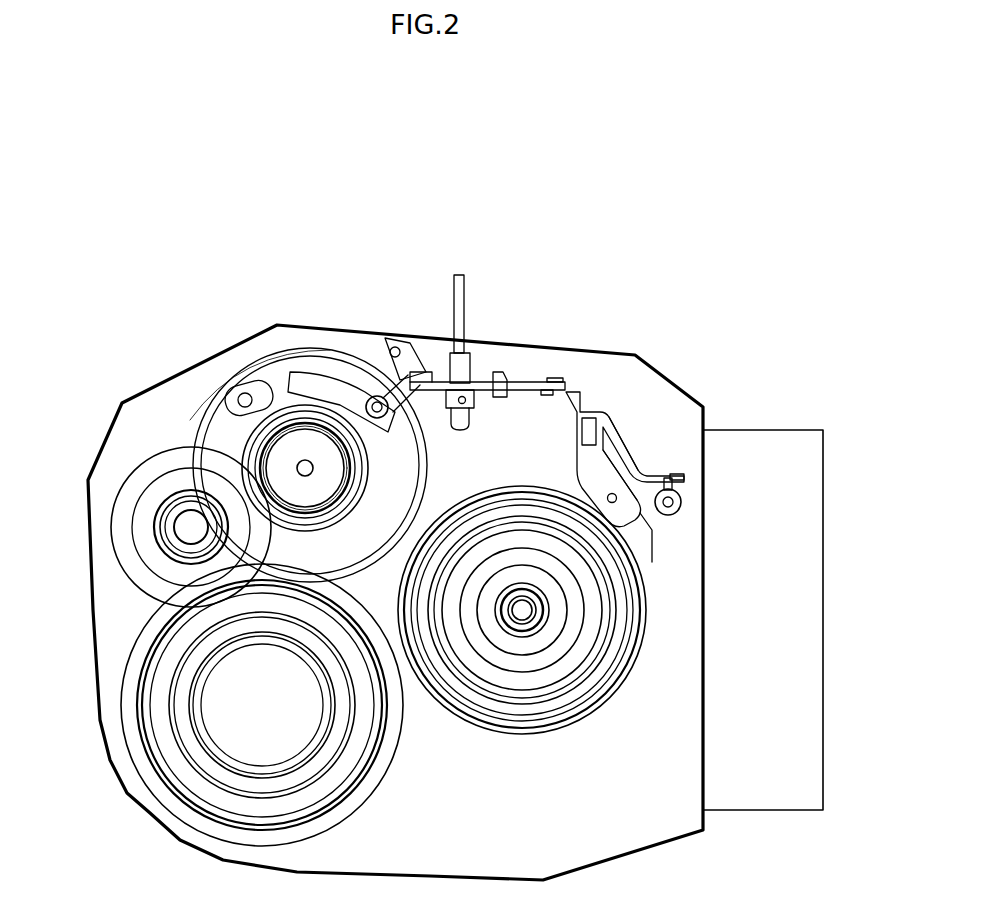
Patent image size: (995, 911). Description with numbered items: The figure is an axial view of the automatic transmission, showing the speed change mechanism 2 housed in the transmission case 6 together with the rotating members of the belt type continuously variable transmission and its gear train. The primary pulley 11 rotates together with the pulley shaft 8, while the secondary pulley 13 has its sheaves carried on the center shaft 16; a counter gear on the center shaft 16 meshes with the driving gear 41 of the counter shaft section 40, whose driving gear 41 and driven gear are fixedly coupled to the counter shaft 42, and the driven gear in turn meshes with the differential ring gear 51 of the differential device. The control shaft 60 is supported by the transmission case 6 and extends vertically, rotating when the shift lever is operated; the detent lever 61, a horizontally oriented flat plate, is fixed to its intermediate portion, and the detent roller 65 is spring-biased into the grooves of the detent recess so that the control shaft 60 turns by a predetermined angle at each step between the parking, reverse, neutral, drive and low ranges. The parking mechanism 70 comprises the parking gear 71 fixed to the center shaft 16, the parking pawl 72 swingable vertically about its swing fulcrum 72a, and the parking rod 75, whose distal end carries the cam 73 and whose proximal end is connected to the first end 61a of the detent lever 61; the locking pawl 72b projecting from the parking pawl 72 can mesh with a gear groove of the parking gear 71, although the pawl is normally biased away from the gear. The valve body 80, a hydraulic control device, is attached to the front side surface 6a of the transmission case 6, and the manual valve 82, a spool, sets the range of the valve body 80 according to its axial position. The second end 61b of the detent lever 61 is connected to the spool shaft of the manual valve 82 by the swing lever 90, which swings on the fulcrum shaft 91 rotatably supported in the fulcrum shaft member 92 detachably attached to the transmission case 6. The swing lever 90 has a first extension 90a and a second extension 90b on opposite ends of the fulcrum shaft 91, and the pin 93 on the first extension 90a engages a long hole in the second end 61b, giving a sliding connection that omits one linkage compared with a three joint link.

The speed change mechanism 2 is at (276, 322).
The transmission case 6 is at (590, 406).
The front side surface 6a is at (707, 468).
The pulley shaft 8 is at (520, 620).
The primary pulley 11 is at (603, 703).
The secondary pulley 13 is at (236, 392).
The center shaft 16 is at (272, 437).
The counter shaft section 40 is at (103, 525).
The driving gear 41 is at (130, 480).
The counter shaft 42 is at (170, 525).
The differential ring gear 51 is at (363, 803).
The control shaft 60 is at (458, 274).
The detent lever 61 is at (537, 382).
The first end 61a is at (425, 365).
The second end 61b is at (545, 388).
The detent roller 65 is at (511, 372).
The parking mechanism 70 is at (310, 360).
The parking gear 71 is at (281, 413).
The parking pawl 72 is at (218, 365).
The swing fulcrum 72a is at (262, 413).
The locking pawl 72b is at (365, 510).
The cam 73 is at (371, 396).
The parking rod 75 is at (387, 338).
The valve body 80 is at (770, 430).
The manual valve 82 is at (694, 494).
The swing lever 90 is at (618, 406).
The first extension 90a is at (587, 405).
The second extension 90b is at (645, 478).
The fulcrum shaft 91 is at (625, 450).
The fulcrum shaft member 92 is at (652, 512).
The pin 93 is at (560, 380).